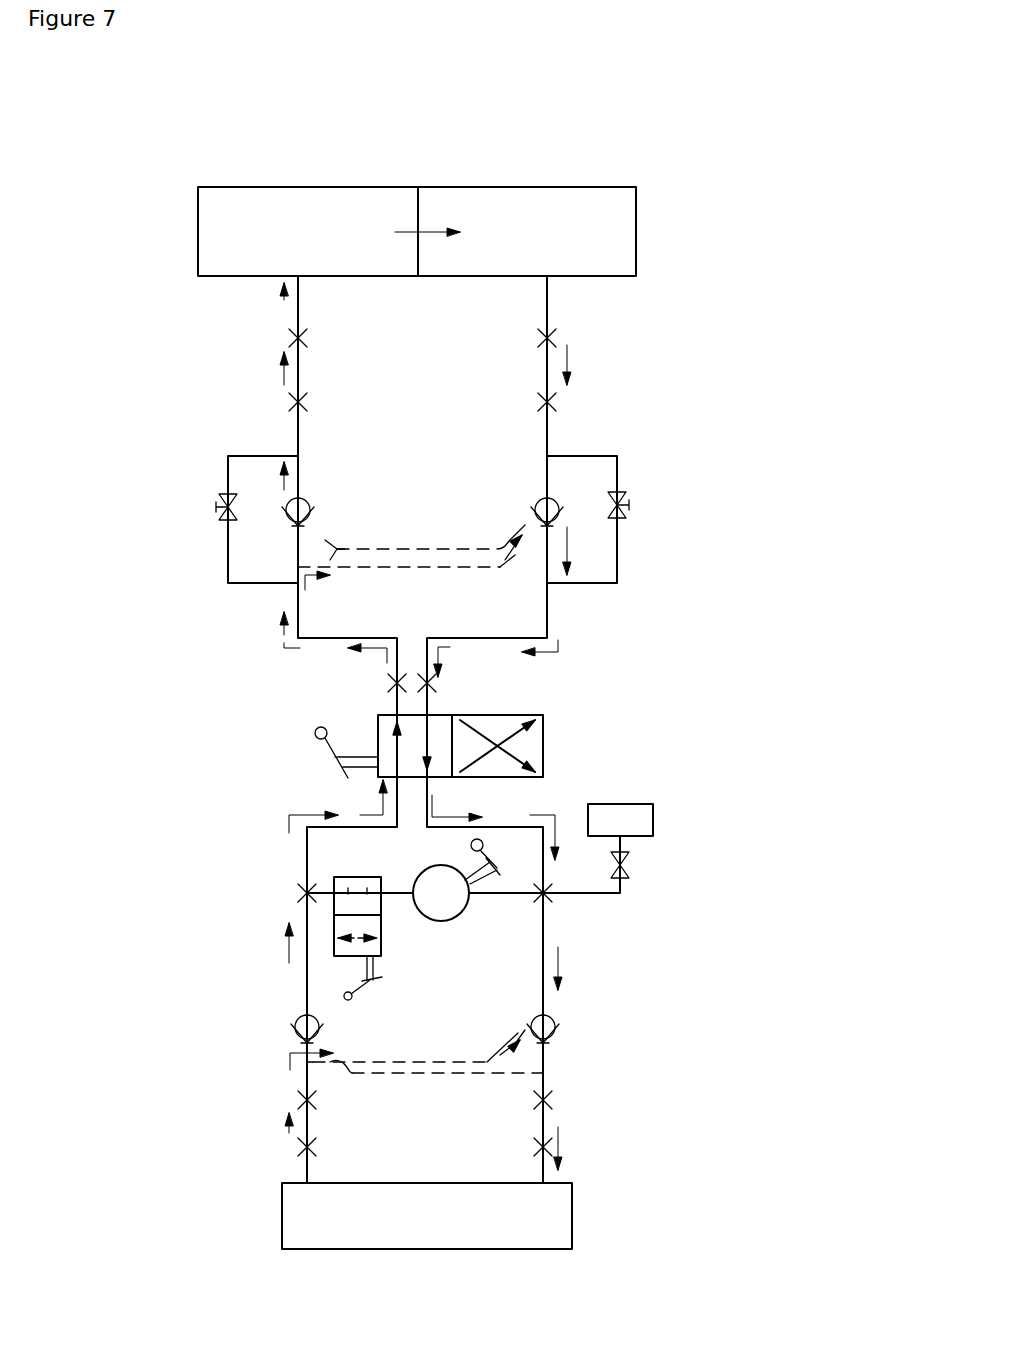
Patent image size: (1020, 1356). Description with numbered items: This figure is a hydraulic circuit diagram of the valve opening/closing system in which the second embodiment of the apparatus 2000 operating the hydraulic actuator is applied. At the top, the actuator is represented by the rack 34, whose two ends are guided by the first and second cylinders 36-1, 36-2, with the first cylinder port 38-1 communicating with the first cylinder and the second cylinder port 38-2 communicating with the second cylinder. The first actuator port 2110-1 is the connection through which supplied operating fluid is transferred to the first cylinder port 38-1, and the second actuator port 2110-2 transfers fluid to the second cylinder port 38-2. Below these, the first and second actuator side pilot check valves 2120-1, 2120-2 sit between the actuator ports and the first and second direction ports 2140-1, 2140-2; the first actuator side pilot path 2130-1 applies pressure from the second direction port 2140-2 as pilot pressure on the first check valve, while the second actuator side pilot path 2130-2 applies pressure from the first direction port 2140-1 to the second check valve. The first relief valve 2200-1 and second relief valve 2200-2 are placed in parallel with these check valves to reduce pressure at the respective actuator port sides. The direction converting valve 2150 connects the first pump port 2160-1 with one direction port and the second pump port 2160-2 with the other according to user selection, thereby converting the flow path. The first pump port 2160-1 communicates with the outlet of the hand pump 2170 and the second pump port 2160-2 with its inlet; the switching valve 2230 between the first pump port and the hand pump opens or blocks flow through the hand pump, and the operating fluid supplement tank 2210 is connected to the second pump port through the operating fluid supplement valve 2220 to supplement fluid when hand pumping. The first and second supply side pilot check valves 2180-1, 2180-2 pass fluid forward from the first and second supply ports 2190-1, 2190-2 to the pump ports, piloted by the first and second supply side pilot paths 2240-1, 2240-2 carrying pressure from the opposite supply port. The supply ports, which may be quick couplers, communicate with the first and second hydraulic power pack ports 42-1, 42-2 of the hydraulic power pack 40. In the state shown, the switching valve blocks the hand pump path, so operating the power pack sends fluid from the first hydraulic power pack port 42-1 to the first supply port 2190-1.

The apparatus operating the hydraulic actuator for opening/closing the valve 2000 is at (540, 138).
The rack 34 is at (418, 215).
The first cylinder 36-1 is at (200, 232).
The second cylinder 36-2 is at (625, 222).
The first cylinder port 38-1 is at (286, 337).
The second cylinder port 38-2 is at (558, 337).
The first actuator port 2110-1 is at (286, 400).
The second actuator port 2110-2 is at (558, 400).
The first actuator side pilot check valve 2120-1 is at (288, 503).
The second actuator side pilot check valve 2120-2 is at (557, 501).
The first actuator side pilot path 2130-1 is at (300, 577).
The second actuator side pilot path 2130-2 is at (462, 572).
The first direction port 2140-1 is at (387, 683).
The second direction port 2140-2 is at (438, 683).
The direction converting valve 2150 is at (544, 745).
The first pump port 2160-1 is at (306, 895).
The second pump port 2160-2 is at (550, 897).
The hand pump 2170 is at (428, 870).
The first supply side pilot check valve 2180-1 is at (300, 1035).
The second supply side pilot check valve 2180-2 is at (557, 1031).
The first supply port 2190-1 is at (300, 1100).
The second supply port 2190-2 is at (551, 1100).
The first relief valve 2200-1 is at (216, 507).
The second relief valve 2200-2 is at (630, 506).
The operating fluid supplement tank 2210 is at (653, 818).
The operating fluid supplement valve 2220 is at (630, 865).
The switching valve 2230 is at (340, 958).
The first supply side pilot path 2240-1 is at (457, 1075).
The second supply side pilot path 2240-2 is at (405, 1062).
The hydraulic power pack 40 is at (573, 1228).
The first hydraulic power pack port 42-1 is at (300, 1147).
The second hydraulic power pack port 42-2 is at (551, 1147).